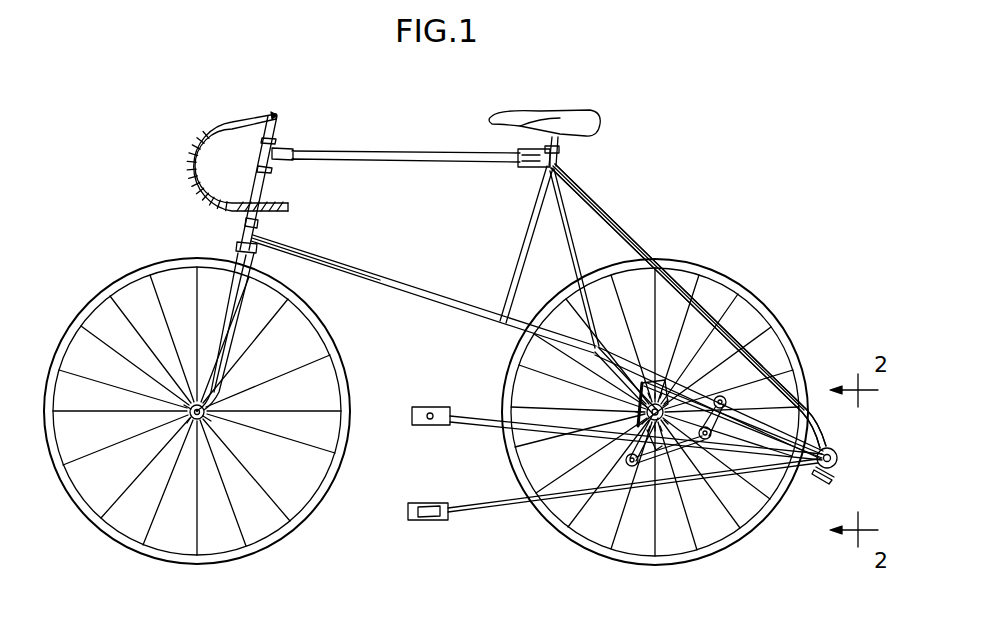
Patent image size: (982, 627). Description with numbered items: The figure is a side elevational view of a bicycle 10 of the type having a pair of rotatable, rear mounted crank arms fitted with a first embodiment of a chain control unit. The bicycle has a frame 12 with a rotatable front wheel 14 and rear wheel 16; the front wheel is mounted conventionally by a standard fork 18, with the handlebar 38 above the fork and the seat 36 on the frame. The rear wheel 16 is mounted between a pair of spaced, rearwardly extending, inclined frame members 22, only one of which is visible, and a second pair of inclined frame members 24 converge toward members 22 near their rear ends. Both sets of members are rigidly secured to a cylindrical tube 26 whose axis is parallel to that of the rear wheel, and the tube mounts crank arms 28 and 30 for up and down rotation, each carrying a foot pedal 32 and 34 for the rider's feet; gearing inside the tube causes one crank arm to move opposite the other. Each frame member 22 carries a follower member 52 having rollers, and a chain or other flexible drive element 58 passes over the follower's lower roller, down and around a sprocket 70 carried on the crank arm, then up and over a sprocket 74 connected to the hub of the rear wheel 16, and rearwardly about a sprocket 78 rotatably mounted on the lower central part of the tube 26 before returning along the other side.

The bicycle 10 is at (622, 156).
The frame 12 is at (612, 209).
The front wheel 14 is at (338, 478).
The rear wheel 16 is at (786, 308).
The fork 18 is at (248, 283).
The frame member 22 is at (675, 389).
The frame member 24 is at (641, 251).
The cylindrical tube 26 is at (843, 451).
The crank arm 28 is at (476, 425).
The crank arm 30 is at (488, 520).
The foot pedal 32 is at (428, 404).
The foot pedal 34 is at (420, 522).
The seat 36 is at (565, 110).
The handlebar 38 is at (184, 166).
The follower member 52 is at (731, 403).
The flexible drive element 58 is at (652, 470).
The sprocket 70 is at (622, 464).
The sprocket 74 is at (632, 403).
The sprocket 78 is at (826, 486).